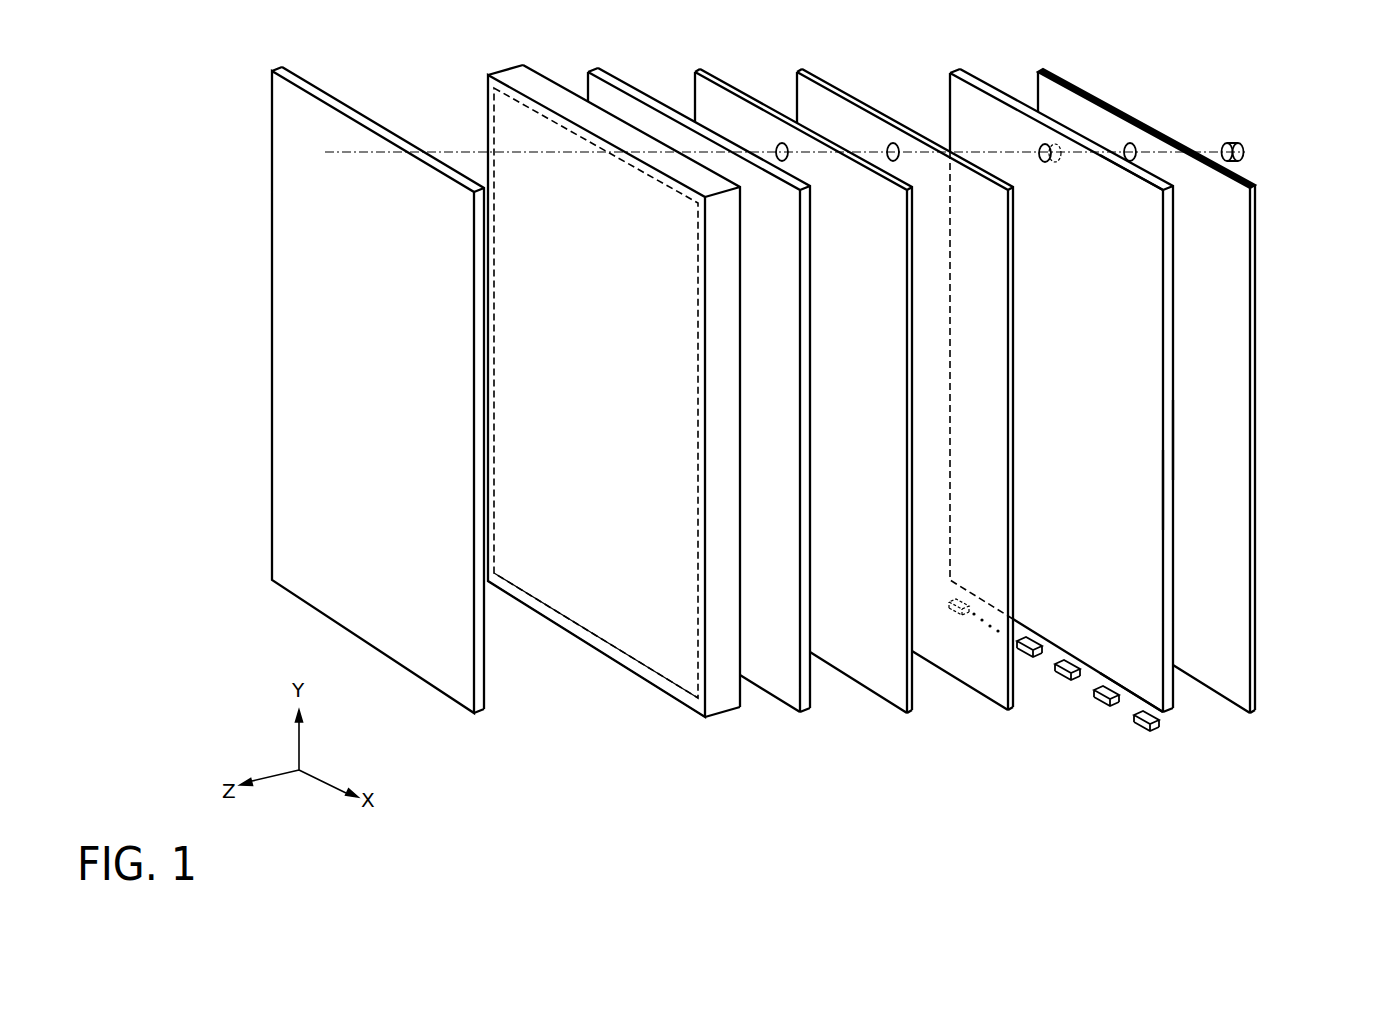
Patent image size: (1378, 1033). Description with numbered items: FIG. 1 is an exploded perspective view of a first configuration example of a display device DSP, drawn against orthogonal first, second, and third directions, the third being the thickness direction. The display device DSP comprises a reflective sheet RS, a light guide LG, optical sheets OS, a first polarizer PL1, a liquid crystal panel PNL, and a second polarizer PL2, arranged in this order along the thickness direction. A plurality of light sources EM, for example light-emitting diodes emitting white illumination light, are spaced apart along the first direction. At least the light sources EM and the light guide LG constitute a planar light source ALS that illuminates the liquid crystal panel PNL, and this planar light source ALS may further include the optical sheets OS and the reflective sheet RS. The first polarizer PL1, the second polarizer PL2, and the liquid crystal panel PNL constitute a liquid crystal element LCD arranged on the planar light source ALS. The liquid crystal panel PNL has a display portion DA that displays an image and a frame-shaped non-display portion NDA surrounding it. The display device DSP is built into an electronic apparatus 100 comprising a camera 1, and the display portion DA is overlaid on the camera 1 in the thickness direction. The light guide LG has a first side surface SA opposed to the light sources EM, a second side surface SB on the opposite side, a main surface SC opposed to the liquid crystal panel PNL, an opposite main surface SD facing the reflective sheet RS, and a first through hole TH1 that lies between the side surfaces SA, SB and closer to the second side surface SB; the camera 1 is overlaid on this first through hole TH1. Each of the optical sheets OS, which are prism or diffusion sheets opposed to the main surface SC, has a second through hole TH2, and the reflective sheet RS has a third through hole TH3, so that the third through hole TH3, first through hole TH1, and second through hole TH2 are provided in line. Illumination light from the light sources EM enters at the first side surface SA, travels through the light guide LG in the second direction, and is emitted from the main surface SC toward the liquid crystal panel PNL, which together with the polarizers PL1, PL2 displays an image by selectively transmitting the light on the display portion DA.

The electronic apparatus 100 is at (1302, 101).
The camera 1 is at (1241, 130).
The display device DSP is at (1300, 822).
The liquid crystal element LCD is at (850, 770).
The second polarizer PL2 is at (481, 708).
The liquid crystal panel PNL is at (620, 414).
The display portion DA is at (587, 610).
The non-display portion NDA is at (630, 672).
The first polarizer PL1 is at (805, 708).
The optical sheets OS is at (963, 688).
The first through hole TH1 is at (1043, 144).
The second through hole TH2 is at (893, 143).
The third through hole TH3 is at (1128, 143).
The light guide LG is at (1166, 714).
The first side surface SA is at (1128, 700).
The second side surface SB is at (1168, 180).
The main surface SC is at (1145, 478).
The main surface SD is at (1185, 438).
The light sources EM is at (1141, 733).
The planar light source ALS is at (1062, 703).
The reflective sheet RS is at (1251, 715).